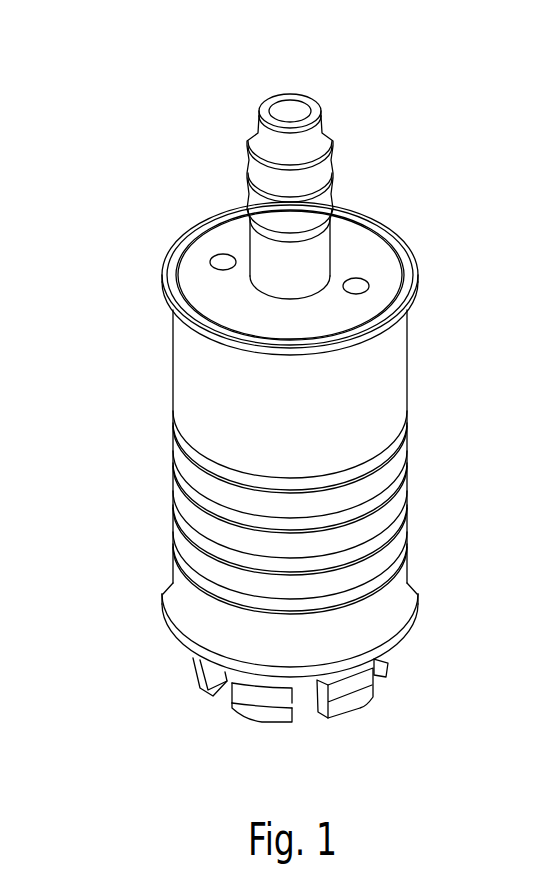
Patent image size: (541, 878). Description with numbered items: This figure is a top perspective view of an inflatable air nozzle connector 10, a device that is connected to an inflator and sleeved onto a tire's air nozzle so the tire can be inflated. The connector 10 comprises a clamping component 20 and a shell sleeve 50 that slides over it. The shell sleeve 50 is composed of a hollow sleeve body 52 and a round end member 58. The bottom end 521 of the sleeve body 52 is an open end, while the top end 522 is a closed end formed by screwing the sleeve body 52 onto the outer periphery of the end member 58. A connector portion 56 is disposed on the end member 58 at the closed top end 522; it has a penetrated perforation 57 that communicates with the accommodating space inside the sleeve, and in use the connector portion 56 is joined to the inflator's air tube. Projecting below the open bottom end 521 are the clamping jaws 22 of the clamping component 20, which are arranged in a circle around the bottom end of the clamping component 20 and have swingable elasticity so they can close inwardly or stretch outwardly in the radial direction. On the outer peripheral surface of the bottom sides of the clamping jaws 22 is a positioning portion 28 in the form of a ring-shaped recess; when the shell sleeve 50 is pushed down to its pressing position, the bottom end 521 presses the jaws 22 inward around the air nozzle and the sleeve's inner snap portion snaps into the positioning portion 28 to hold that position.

The inflatable air nozzle connector 10 is at (300, 420).
The clamping component 20 is at (280, 746).
The clamping jaws 22 is at (257, 712).
The positioning portion 28 is at (242, 695).
The shell sleeve 50 is at (300, 424).
The sleeve body 52 is at (198, 391).
The bottom end 521 is at (182, 650).
The top end 522 is at (170, 305).
The connector portion 56 is at (308, 160).
The perforation 57 is at (288, 112).
The end member 58 is at (230, 237).